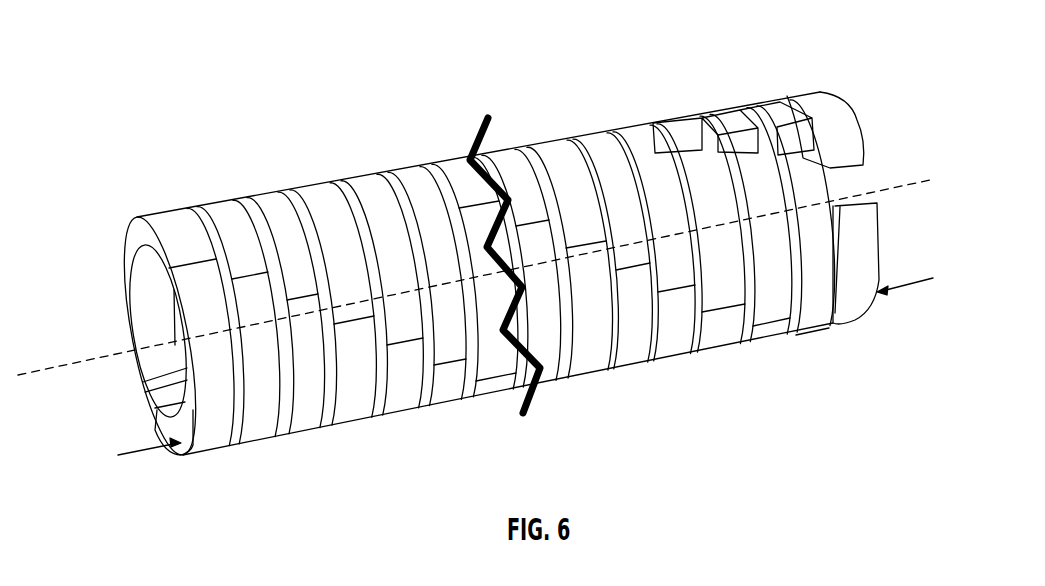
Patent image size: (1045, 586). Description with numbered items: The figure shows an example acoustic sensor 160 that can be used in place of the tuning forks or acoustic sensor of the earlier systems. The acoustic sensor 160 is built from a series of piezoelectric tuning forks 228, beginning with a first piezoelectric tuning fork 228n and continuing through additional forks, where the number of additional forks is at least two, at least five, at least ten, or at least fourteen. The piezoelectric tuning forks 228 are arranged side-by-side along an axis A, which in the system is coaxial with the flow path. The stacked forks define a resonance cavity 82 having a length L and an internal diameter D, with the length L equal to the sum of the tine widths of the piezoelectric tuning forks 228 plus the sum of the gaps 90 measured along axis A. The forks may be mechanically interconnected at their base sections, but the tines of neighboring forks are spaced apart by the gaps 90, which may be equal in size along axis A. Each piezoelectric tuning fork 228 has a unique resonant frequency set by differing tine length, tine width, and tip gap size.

The piezoelectric tuning forks 228 is at (817, 56).
The piezoelectric tuning fork 228n is at (172, 220).
The gaps 90 is at (425, 413).
The acoustic sensor 160 is at (204, 462).
The resonance cavity 82 is at (168, 311).
The internal diameter D is at (143, 395).
The axis A is at (54, 372).
The length L is at (140, 457).